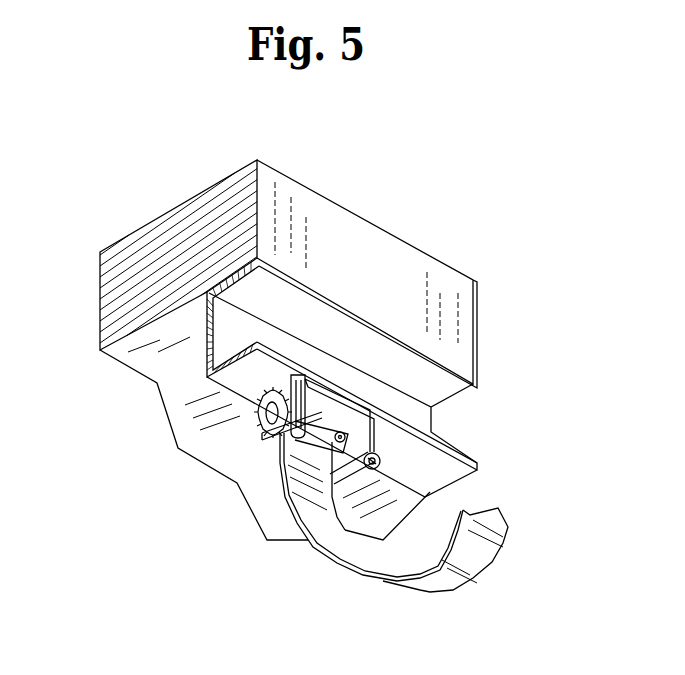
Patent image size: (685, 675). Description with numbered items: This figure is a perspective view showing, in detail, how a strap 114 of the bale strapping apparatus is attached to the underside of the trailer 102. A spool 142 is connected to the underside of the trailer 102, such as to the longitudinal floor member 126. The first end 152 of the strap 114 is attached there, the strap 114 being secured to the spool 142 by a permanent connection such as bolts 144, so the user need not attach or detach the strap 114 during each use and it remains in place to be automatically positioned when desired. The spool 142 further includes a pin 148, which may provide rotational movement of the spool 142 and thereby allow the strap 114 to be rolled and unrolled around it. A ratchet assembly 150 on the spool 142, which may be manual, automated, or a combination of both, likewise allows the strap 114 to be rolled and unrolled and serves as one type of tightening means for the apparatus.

The trailer 102 is at (512, 295).
The strap 114 is at (475, 557).
The longitudinal floor member 126 is at (203, 342).
The spool 142 is at (258, 458).
The bolts 144 is at (320, 410).
The pin 148 is at (380, 463).
The ratchet assembly 150 is at (243, 419).
The first end 152 is at (303, 408).